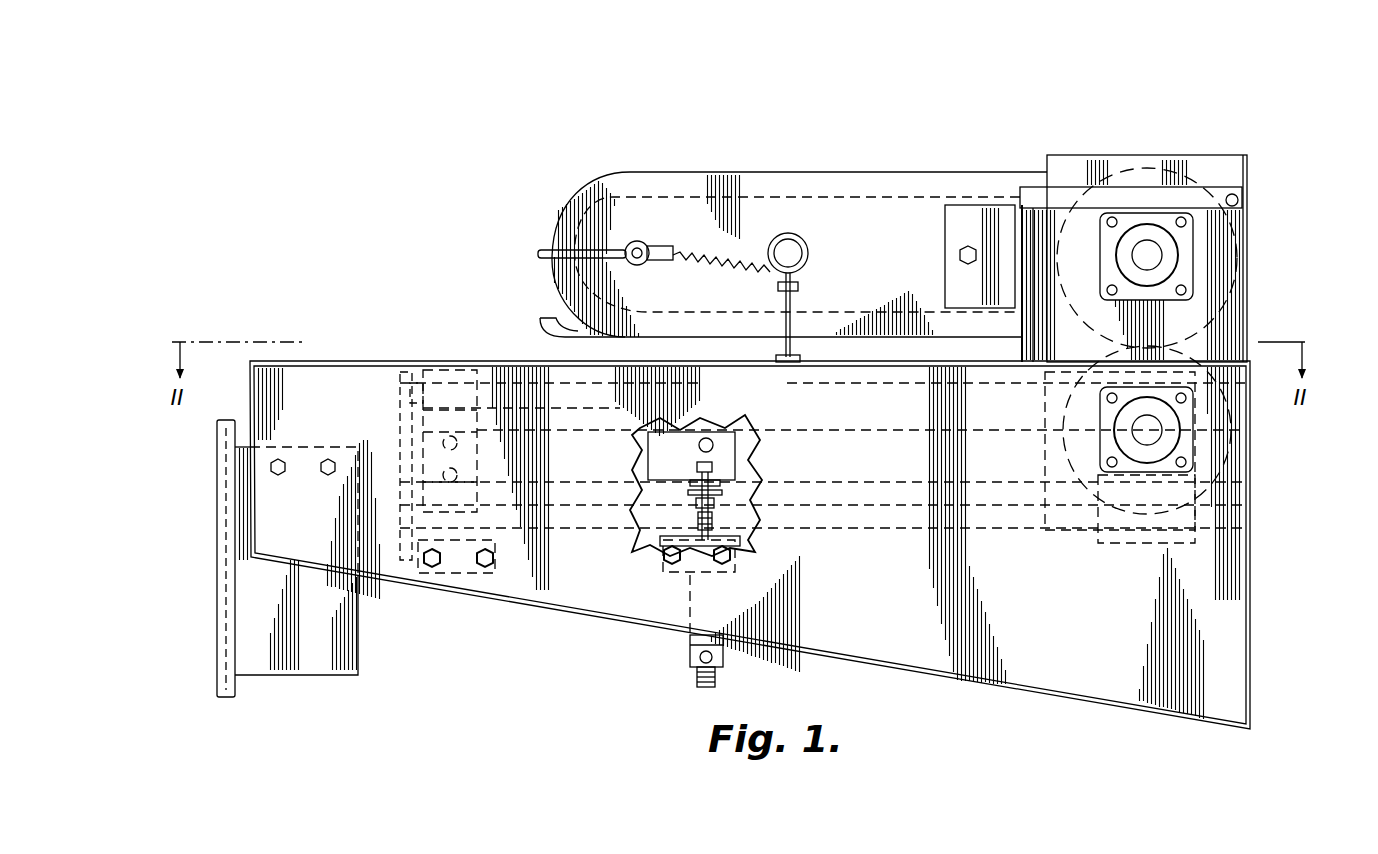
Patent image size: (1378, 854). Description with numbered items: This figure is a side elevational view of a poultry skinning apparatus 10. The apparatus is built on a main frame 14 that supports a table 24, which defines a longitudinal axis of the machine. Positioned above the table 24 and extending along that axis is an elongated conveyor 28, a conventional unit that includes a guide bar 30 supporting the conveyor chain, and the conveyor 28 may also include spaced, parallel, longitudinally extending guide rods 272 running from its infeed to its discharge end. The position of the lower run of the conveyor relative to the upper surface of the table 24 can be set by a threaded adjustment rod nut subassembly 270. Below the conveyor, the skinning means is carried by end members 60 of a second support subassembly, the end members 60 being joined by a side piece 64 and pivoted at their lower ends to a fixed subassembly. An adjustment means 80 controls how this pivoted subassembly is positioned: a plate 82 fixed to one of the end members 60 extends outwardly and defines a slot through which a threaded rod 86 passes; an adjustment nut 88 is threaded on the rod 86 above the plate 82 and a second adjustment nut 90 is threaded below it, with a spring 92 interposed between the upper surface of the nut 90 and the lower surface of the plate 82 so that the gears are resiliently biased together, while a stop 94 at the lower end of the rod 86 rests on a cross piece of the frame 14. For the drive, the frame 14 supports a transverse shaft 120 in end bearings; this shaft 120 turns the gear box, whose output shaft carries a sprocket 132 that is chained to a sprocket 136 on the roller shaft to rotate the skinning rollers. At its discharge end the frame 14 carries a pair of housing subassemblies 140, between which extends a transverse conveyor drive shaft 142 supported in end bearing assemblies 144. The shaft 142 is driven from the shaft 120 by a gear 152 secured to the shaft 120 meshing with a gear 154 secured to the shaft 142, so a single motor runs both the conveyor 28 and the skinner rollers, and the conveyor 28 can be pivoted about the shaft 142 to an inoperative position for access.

The poultry skinning apparatus 10 is at (1137, 127).
The main frame 14 is at (1253, 437).
The table 24 is at (433, 340).
The conveyor 28 is at (827, 160).
The guide bar 30 is at (700, 327).
The end members 60 is at (700, 425).
The side piece 64 is at (720, 450).
The adjustment means 80 is at (739, 483).
The plate 82 is at (740, 472).
The threaded rod 86 is at (718, 520).
The adjustment nut 88 is at (698, 478).
The adjustment nut 90 is at (680, 535).
The spring 92 is at (740, 490).
The stop 94 is at (750, 545).
The transverse shaft 120 is at (1110, 462).
The sprocket 132 is at (390, 445).
The sprocket 136 is at (395, 360).
The housing subassemblies 140 is at (1265, 196).
The transverse conveyor drive shaft 142 is at (1152, 250).
The end bearing assemblies 144 is at (1183, 267).
The gear 152 is at (1215, 460).
The gear 154 is at (1200, 310).
The threaded adjustment rod nut subassembly 270 is at (797, 300).
The guide rods 272 is at (557, 317).